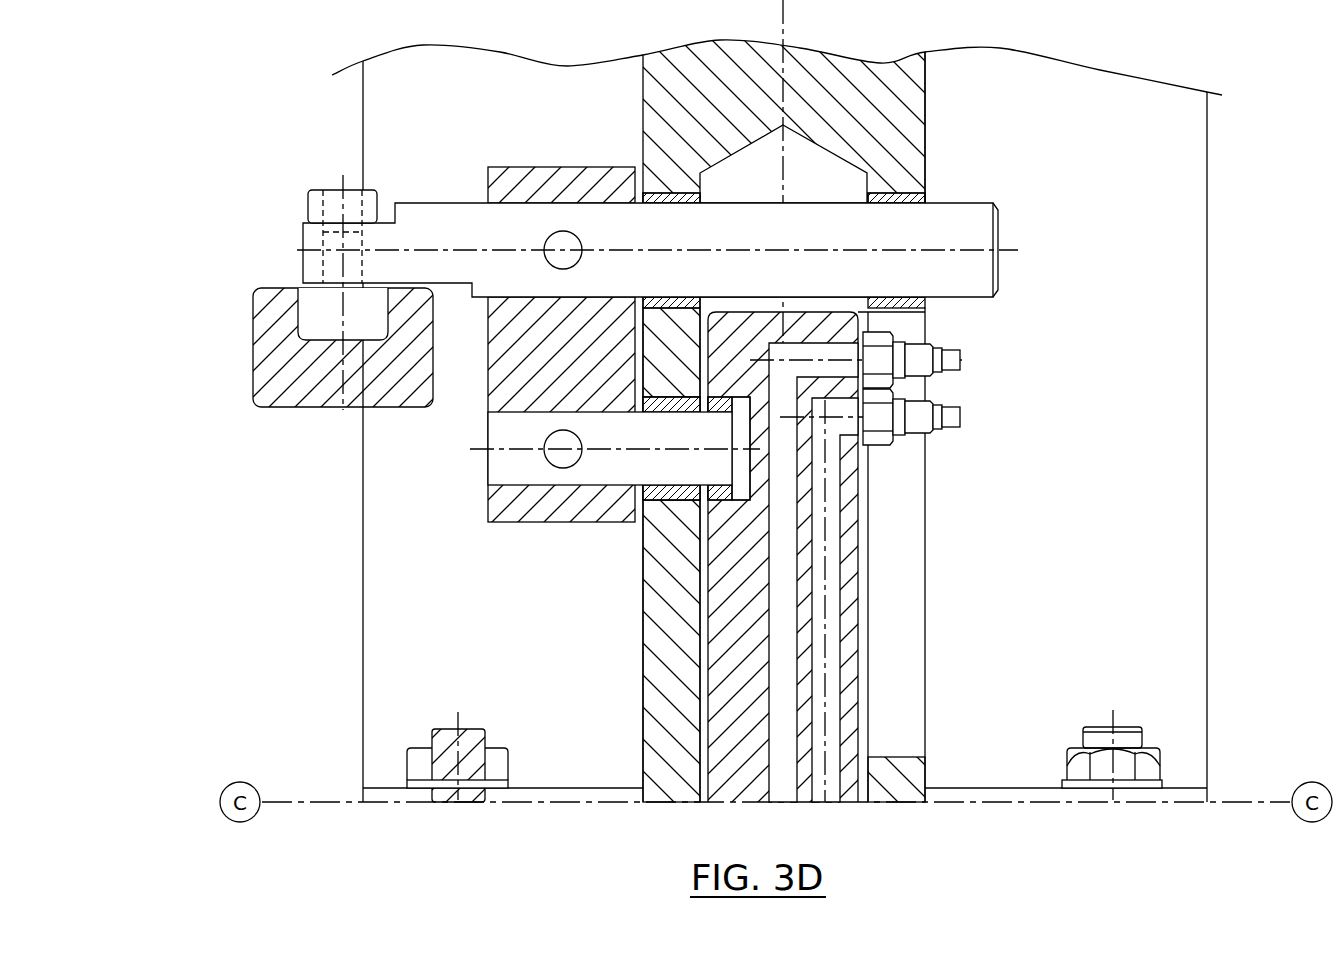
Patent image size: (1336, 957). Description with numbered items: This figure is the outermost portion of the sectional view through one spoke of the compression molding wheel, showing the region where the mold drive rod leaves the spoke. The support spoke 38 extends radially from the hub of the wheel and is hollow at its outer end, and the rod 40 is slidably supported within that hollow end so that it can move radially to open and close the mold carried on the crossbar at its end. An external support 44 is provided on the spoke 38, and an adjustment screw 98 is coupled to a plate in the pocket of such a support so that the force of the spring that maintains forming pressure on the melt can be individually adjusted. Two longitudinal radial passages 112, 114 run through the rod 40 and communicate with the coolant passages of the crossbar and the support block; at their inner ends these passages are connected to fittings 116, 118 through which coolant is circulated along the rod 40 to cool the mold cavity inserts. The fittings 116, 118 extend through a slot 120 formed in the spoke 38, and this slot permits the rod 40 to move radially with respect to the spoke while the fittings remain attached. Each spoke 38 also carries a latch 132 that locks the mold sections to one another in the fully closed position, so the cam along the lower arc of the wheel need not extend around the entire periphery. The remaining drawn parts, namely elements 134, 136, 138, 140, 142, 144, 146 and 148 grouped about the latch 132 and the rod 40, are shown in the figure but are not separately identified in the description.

The support spoke 38 is at (830, 68).
The rod 40 is at (857, 695).
The external support 44 is at (983, 790).
The adjustment screw 98 is at (470, 745).
The longitudinal radial passage 112 is at (835, 632).
The longitudinal radial passage 114 is at (788, 590).
The fitting 116 is at (955, 422).
The fitting 118 is at (955, 365).
The slot 120 is at (912, 517).
The latch 132 is at (639, 276).
The clamp arm 134 is at (973, 228).
The spacer 136 is at (925, 300).
The clamp bolt 138 is at (318, 312).
The clamp block 140 is at (315, 400).
The mounting block 142 is at (497, 503).
The pivot pin 144 is at (593, 468).
The bushing 146 is at (679, 482).
The pin head 148 is at (720, 412).